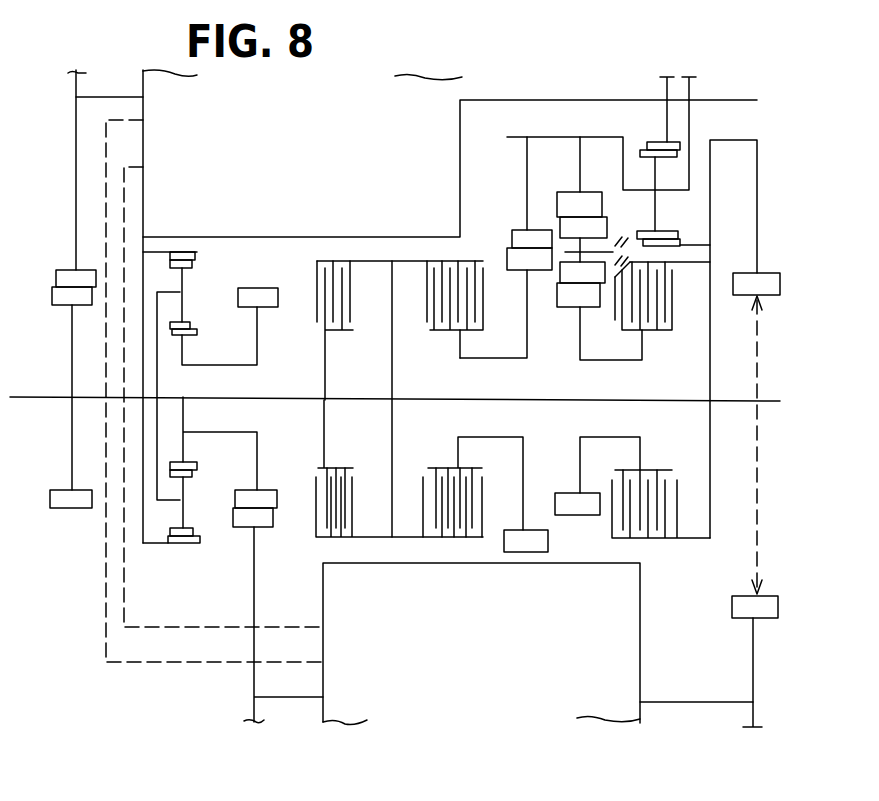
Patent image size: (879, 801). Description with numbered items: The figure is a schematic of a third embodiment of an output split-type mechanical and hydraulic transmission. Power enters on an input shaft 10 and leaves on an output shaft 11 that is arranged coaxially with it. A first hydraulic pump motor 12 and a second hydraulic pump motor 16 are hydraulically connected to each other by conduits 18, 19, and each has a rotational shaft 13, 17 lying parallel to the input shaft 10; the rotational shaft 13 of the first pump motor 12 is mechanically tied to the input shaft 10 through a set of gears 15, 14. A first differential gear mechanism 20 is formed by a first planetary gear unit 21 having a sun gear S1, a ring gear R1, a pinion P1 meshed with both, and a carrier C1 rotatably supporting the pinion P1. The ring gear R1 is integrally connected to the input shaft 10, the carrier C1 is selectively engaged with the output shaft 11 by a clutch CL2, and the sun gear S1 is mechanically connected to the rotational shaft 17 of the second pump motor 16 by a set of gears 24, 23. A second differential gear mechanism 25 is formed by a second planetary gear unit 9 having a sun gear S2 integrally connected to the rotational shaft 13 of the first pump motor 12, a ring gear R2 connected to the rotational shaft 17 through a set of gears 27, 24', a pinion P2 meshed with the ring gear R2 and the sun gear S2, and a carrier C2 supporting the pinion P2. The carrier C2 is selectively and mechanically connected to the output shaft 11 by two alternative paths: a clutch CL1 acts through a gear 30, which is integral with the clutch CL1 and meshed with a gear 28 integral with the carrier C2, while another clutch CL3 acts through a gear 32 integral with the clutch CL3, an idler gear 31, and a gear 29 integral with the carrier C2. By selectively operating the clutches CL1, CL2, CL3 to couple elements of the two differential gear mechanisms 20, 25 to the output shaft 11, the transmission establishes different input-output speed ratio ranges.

The second planetary gear unit 9 is at (654, 122).
The input shaft 10 is at (45, 397).
The output shaft 11 is at (632, 403).
The first hydraulic pump motor 12 is at (448, 101).
The rotational shaft 13 is at (110, 97).
The gear 14 is at (72, 320).
The gear 15 is at (76, 146).
The second hydraulic pump motor 16 is at (350, 703).
The rotational shaft 17 is at (287, 700).
The conduit 18 is at (192, 627).
The conduit 19 is at (148, 662).
The first differential gear mechanism 20 is at (210, 351).
The first planetary gear unit 21 is at (190, 246).
The gear 23 is at (258, 462).
The gear 24 is at (260, 625).
The gear 24' is at (777, 649).
The second differential gear mechanism 25 is at (629, 163).
The gear 27 is at (758, 226).
The gear 28 is at (527, 158).
The gear 29 is at (579, 160).
The gear 30 is at (529, 335).
The idler gear 31 is at (566, 250).
The gear 32 is at (580, 337).
The carrier C1 is at (162, 292).
The ring gear R1 is at (185, 250).
The pinion P1 is at (186, 311).
The sun gear S1 is at (182, 345).
The carrier C2 is at (689, 172).
The ring gear R2 is at (700, 246).
The pinion P2 is at (657, 214).
The sun gear S2 is at (667, 125).
The clutch CL1 is at (440, 331).
The clutch CL2 is at (340, 331).
The clutch CL3 is at (652, 331).